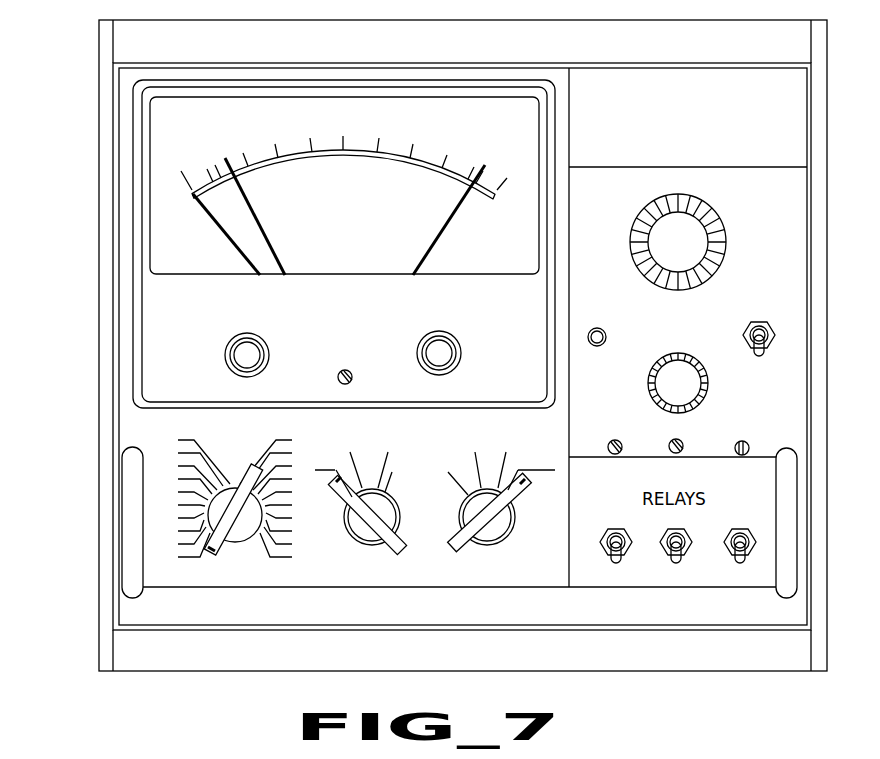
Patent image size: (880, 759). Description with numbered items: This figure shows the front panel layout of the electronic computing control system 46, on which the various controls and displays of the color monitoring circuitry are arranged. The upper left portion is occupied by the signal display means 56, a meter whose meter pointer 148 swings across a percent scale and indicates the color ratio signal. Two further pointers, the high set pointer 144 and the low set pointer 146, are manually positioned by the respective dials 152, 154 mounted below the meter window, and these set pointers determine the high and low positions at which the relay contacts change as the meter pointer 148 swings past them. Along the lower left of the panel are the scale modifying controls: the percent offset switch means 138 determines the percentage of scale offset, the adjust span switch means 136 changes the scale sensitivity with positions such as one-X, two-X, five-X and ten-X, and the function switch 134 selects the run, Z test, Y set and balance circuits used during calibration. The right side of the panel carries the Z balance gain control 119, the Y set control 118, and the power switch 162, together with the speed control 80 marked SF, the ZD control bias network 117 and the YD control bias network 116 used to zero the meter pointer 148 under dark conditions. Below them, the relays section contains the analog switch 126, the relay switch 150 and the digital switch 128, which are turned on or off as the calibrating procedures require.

The electronic computing control system 46 is at (668, 674).
The signal display means 56 is at (168, 284).
The high set pointer 144 is at (443, 235).
The low set pointer 146 is at (260, 218).
The meter pointer 148 is at (228, 234).
The high set point control dial 152 is at (462, 348).
The low set point control dial 154 is at (270, 352).
The Z balance gain control 119 is at (723, 235).
The Y set control 118 is at (648, 383).
The power switch 162 is at (752, 331).
The speed control circuit SF 80 is at (607, 450).
The ZD control bias network 117 is at (670, 450).
The YD control bias network 116 is at (737, 452).
The analog switch 126 is at (604, 552).
The relay switch 150 is at (663, 552).
The digital switch 128 is at (727, 552).
The percent offset switch means 138 is at (266, 524).
The adjust span switch means 136 is at (400, 503).
The function switch 134 is at (510, 541).